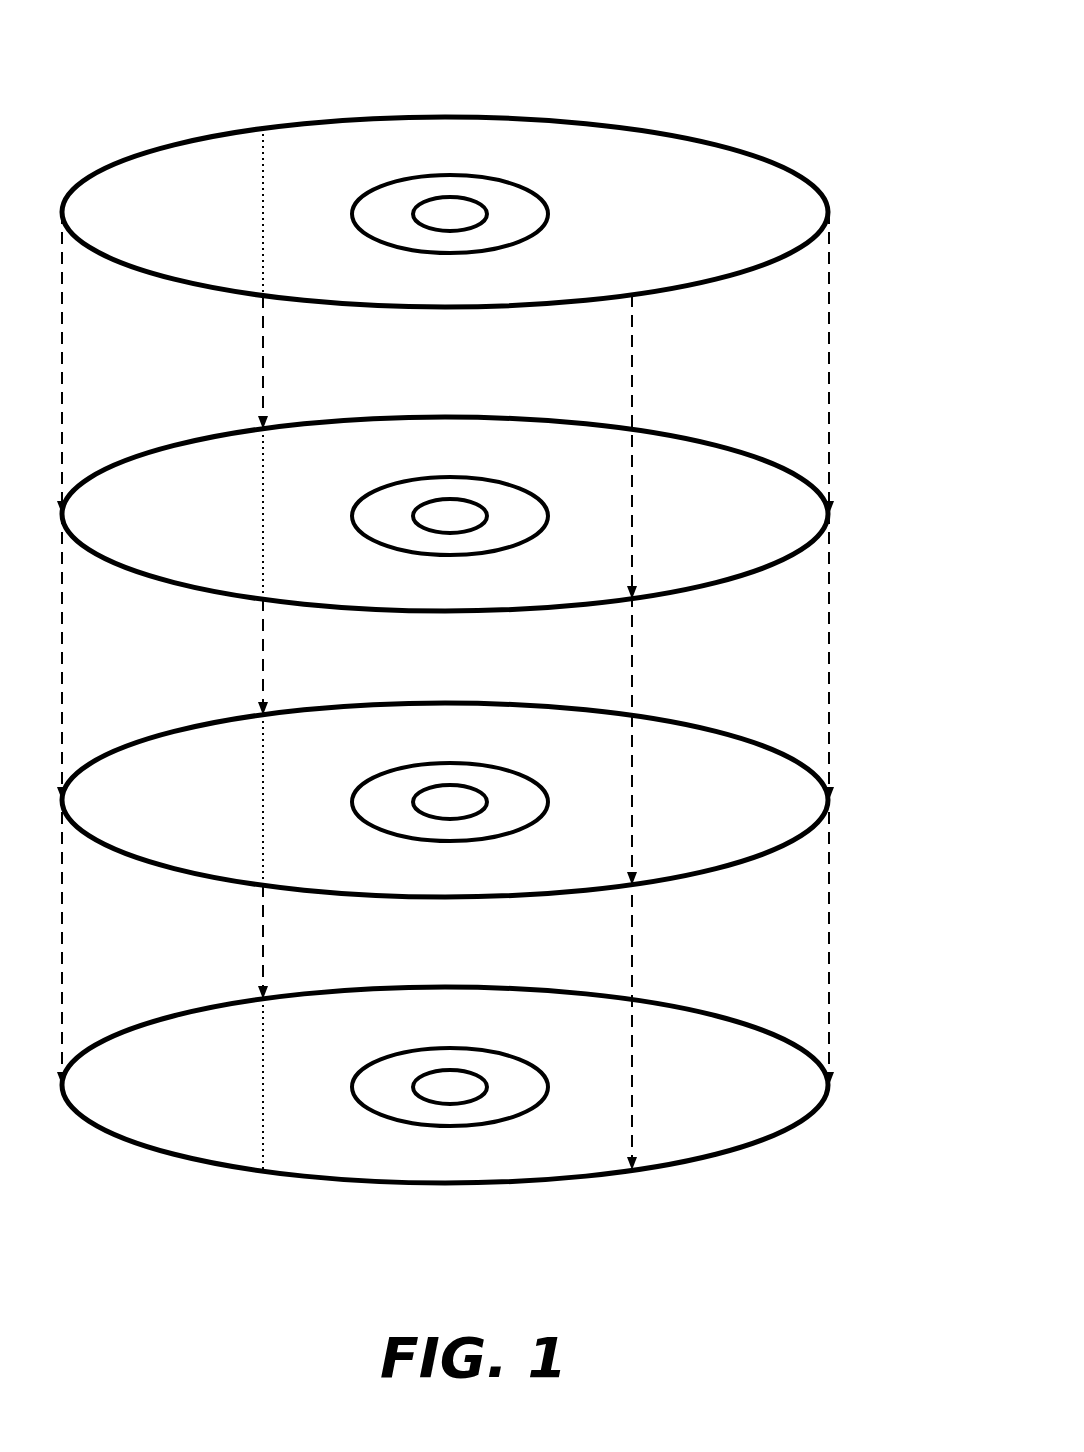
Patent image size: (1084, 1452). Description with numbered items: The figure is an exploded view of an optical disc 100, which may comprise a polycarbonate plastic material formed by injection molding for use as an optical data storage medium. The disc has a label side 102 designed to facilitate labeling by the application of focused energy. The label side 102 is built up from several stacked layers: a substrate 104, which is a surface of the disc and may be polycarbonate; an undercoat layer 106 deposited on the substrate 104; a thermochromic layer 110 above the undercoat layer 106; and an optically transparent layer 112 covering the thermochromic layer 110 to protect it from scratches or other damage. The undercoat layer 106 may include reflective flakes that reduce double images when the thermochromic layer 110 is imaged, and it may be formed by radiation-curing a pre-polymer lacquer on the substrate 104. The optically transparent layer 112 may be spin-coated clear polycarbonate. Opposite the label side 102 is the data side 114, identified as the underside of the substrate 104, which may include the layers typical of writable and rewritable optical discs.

The optical disc 100 is at (898, 247).
The label side 102 is at (424, 88).
The substrate 104 is at (735, 1155).
The undercoat layer 106 is at (690, 880).
The thermochromic layer 110 is at (690, 595).
The optically transparent layer 112 is at (680, 297).
The data side 114 is at (352, 1203).